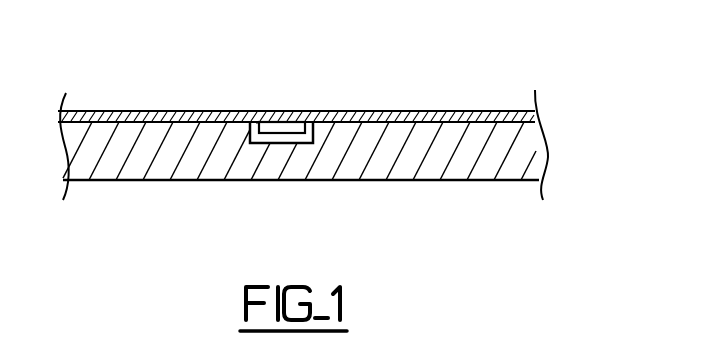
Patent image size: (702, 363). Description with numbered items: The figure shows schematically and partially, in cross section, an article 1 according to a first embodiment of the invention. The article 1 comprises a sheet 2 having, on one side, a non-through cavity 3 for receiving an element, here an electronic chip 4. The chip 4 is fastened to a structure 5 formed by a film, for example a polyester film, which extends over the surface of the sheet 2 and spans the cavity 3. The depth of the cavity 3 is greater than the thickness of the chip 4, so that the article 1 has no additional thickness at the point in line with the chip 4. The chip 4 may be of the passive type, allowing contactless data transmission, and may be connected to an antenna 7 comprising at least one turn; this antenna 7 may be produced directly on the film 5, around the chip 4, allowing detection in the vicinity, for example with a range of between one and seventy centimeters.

The article 1 is at (307, 122).
The sheet 2 is at (451, 153).
The non-through cavity 3 is at (251, 141).
The electronic chip 4 is at (285, 133).
The structure formed by a film 5 is at (407, 110).
The antenna 7 is at (257, 124).